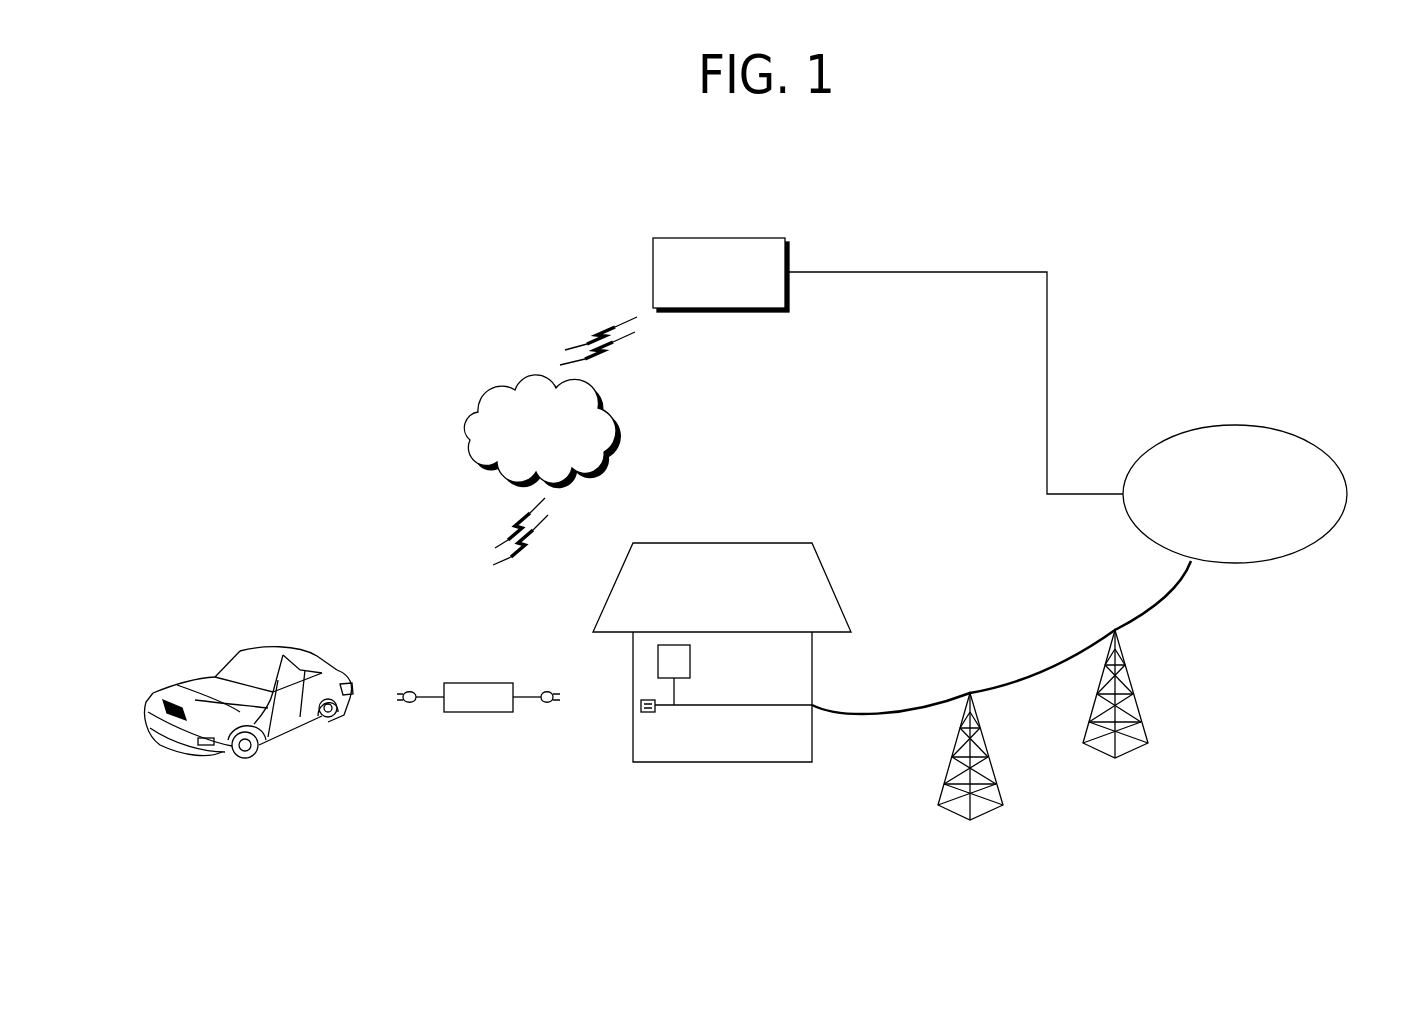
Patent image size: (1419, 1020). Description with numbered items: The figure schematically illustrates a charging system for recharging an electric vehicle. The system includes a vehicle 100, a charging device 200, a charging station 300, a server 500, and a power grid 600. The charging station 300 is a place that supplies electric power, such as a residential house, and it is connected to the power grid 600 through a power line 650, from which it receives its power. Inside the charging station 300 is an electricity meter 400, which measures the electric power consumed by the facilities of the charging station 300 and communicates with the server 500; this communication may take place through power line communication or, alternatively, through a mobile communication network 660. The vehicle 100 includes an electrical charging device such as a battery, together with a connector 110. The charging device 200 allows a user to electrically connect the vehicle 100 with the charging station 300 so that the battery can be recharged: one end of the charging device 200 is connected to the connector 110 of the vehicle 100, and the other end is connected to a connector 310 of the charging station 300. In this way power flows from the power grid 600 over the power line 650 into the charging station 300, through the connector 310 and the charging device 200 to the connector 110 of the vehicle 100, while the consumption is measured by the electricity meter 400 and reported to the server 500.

The vehicle 100 is at (270, 650).
The connector 110 is at (343, 667).
The charging device 200 is at (488, 664).
The charging station 300 is at (775, 543).
The connector 310 is at (649, 715).
The electricity meter 400 is at (691, 661).
The server 500 is at (653, 270).
The power grid 600 is at (1288, 427).
The power line 650 is at (1023, 675).
The mobile communication network 660 is at (626, 408).